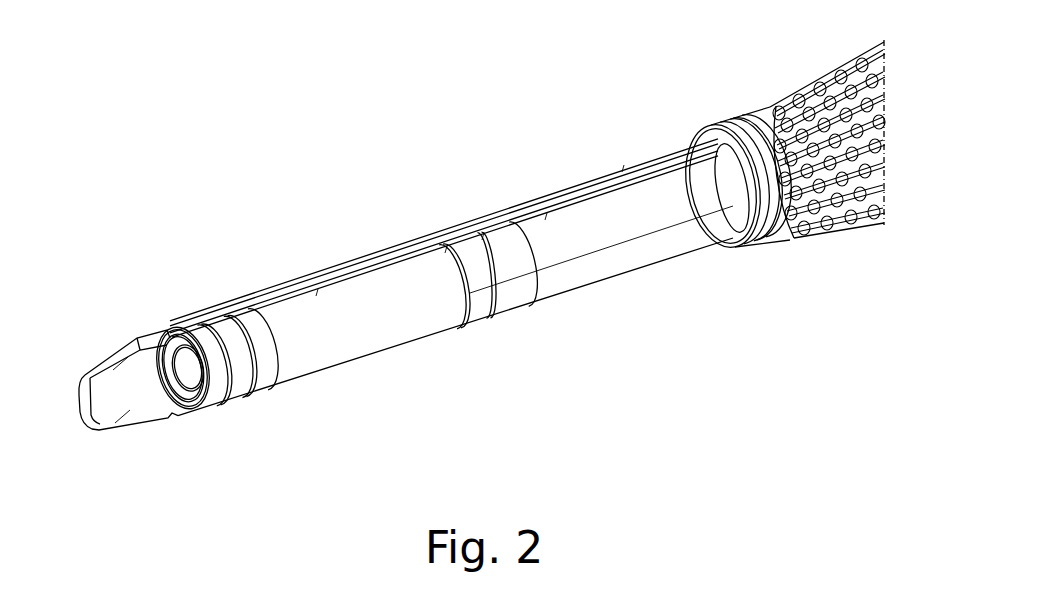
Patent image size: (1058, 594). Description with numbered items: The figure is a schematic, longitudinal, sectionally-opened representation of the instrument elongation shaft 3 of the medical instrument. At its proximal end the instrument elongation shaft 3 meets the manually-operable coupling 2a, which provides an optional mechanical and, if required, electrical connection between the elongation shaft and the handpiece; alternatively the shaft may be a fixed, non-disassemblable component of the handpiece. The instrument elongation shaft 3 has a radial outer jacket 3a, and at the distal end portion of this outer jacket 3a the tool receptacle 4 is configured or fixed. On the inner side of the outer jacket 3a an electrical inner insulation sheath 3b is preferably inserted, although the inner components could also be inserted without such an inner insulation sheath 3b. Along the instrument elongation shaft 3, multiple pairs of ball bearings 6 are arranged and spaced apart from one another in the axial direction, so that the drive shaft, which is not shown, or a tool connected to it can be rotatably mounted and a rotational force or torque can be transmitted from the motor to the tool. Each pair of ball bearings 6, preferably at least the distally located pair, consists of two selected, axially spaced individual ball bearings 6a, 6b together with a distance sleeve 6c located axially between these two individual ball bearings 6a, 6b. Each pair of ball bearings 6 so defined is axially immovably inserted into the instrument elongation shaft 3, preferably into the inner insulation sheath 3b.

The manually-operable coupling 2a is at (793, 110).
The instrument elongation shaft 3 is at (444, 204).
The radial outer jacket of the elongation shaft 3a is at (453, 228).
The inner insulation sheath of the elongation shaft 3b is at (620, 172).
The tool receptacle 4 is at (115, 346).
The pair of ball bearings 6 is at (432, 286).
The individual ball bearing 6a is at (203, 342).
The individual ball bearing 6b is at (252, 320).
The distance sleeve 6c is at (223, 330).